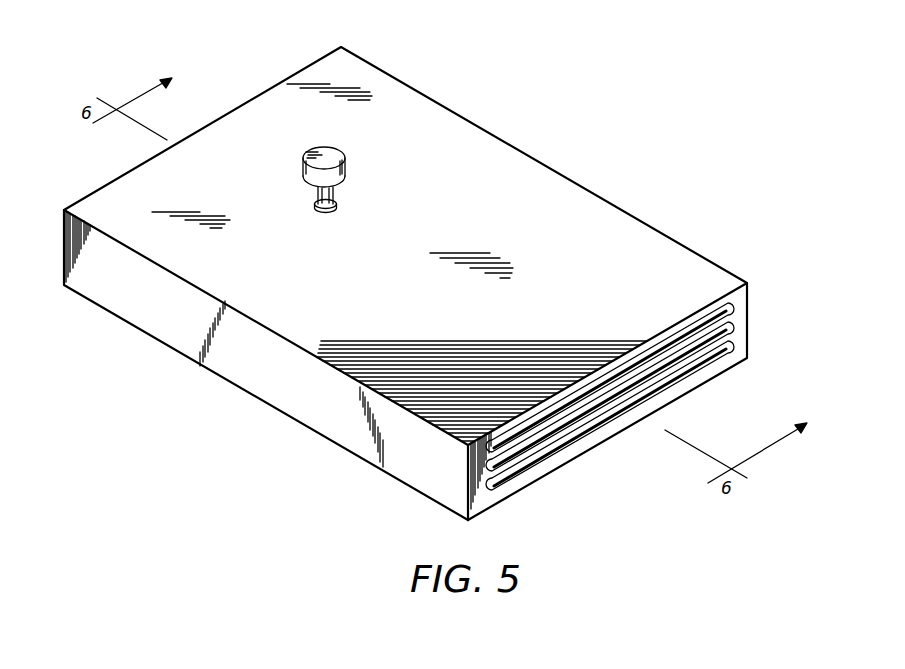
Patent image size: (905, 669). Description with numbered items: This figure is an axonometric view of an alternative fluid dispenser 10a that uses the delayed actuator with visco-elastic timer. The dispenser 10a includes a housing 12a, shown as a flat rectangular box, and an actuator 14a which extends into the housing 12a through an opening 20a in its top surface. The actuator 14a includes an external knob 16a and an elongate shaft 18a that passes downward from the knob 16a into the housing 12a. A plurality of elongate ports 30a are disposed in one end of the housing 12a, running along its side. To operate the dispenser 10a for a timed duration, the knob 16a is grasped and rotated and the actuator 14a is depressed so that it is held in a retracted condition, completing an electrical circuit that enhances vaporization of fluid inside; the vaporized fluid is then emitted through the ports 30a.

The dispenser 10a is at (262, 69).
The housing 12a is at (522, 151).
The actuator 14a is at (330, 148).
The knob 16a is at (309, 152).
The elongate shaft 18a is at (331, 195).
The opening 20a is at (316, 210).
The elongate ports 30a is at (729, 355).